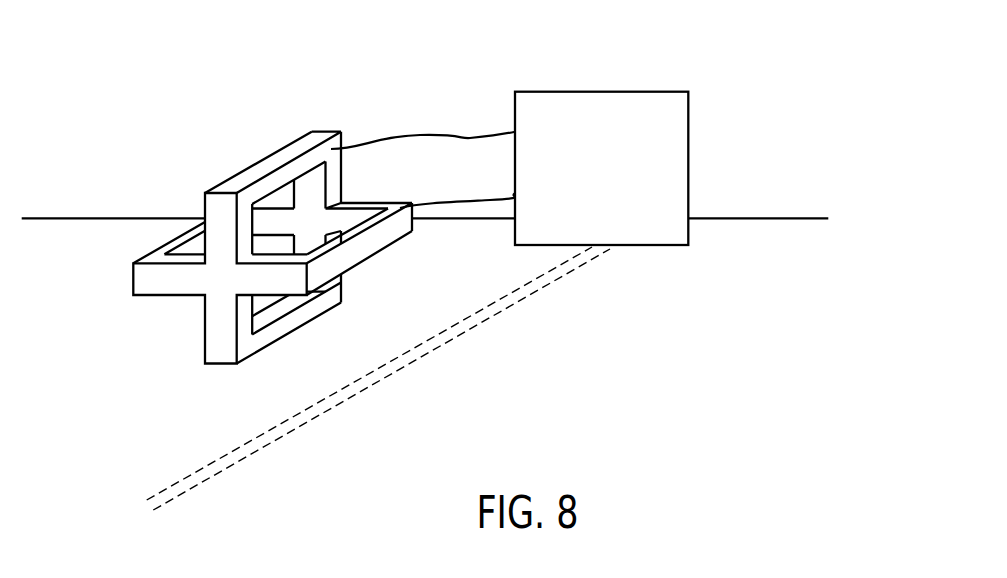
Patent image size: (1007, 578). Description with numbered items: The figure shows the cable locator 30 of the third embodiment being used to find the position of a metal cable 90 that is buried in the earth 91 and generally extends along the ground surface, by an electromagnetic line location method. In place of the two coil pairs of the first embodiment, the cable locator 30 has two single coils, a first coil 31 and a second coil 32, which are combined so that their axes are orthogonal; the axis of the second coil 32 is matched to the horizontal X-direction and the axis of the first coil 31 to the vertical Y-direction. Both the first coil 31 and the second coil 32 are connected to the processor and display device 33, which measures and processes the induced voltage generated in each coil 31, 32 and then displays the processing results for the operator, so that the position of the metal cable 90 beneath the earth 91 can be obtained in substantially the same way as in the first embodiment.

The cable locator 30 is at (420, 132).
The first coil 31 is at (272, 245).
The second coil 32 is at (218, 208).
The processor and display device 33 is at (625, 100).
The metal cable 90 is at (435, 342).
The earth 91 is at (767, 240).